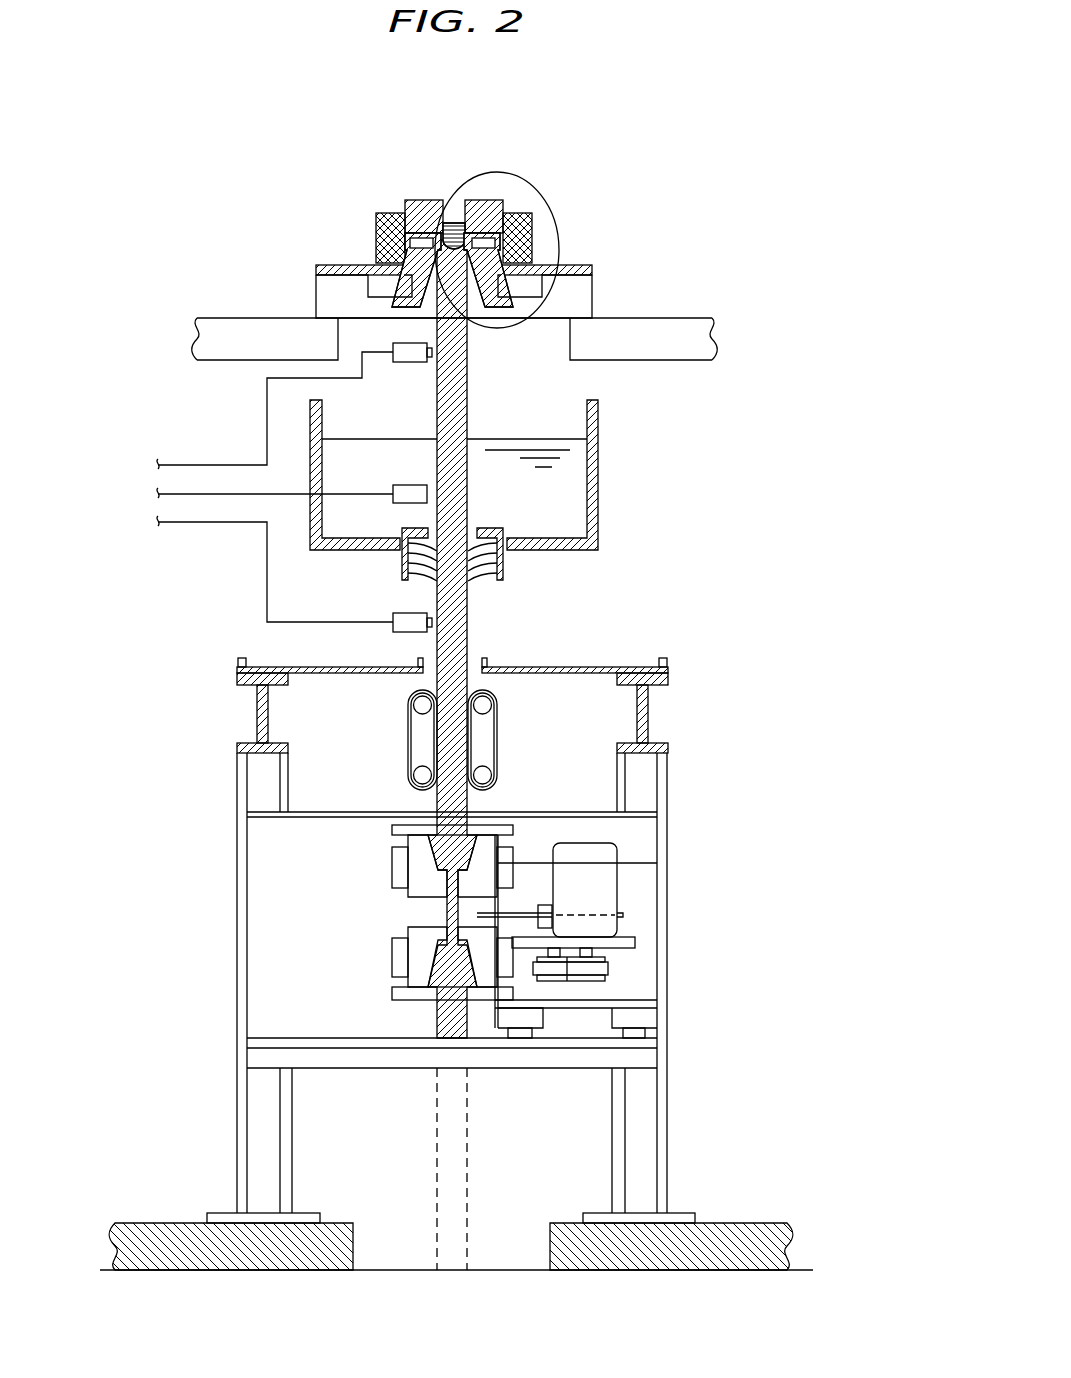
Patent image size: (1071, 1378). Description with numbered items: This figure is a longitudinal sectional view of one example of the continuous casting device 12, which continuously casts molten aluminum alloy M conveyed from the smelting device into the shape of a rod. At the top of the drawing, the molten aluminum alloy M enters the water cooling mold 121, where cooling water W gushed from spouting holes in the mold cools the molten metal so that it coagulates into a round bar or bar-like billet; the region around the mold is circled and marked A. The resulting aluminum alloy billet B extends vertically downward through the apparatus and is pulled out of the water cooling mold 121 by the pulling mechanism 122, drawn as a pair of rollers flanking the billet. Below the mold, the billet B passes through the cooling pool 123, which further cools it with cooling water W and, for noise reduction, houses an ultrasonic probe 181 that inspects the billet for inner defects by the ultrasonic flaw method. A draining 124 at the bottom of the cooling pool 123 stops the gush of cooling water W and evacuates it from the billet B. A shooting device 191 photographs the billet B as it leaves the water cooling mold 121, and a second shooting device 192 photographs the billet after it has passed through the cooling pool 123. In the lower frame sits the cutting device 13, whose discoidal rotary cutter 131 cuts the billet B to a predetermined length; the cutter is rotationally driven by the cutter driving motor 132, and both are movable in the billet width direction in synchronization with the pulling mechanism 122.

The continuous casting device 12 is at (700, 502).
The water cooling mold 121 is at (533, 226).
The pulling mechanism 122 is at (502, 731).
The cooling pool 123 is at (599, 455).
The draining 124 is at (508, 570).
The cutting device 13 is at (618, 888).
The rotary cutter 131 is at (458, 906).
The cutter driving motor 132 is at (612, 843).
The ultrasonic probe 181 is at (394, 487).
The shooting device 191 is at (410, 362).
The shooting device 192 is at (395, 615).
The region A (casting portion) A is at (532, 183).
The aluminum alloy billet B is at (470, 357).
The molten aluminum alloy M is at (455, 197).
The cooling water W is at (516, 437).